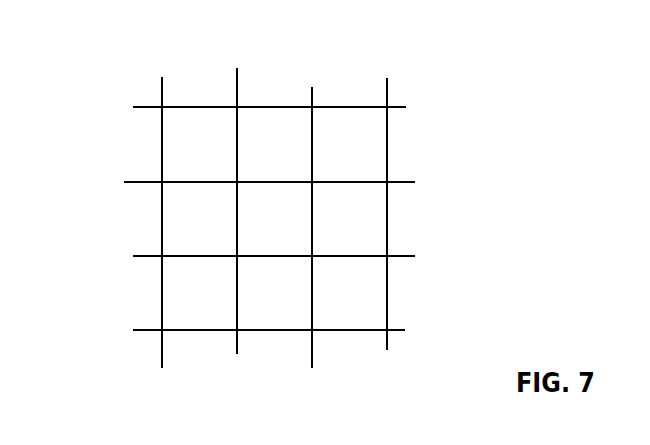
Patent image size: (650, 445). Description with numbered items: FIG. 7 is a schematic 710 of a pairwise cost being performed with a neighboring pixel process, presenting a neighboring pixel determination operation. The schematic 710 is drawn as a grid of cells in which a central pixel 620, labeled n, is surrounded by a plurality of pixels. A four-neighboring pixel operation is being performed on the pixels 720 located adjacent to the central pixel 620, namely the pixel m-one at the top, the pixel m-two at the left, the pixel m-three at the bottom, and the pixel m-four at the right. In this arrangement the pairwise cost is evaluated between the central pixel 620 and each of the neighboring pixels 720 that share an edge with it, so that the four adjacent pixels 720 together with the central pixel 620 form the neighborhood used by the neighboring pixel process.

The schematic 710 is at (423, 50).
The central pixel 620 is at (256, 198).
The pixels 720 is at (173, 236).